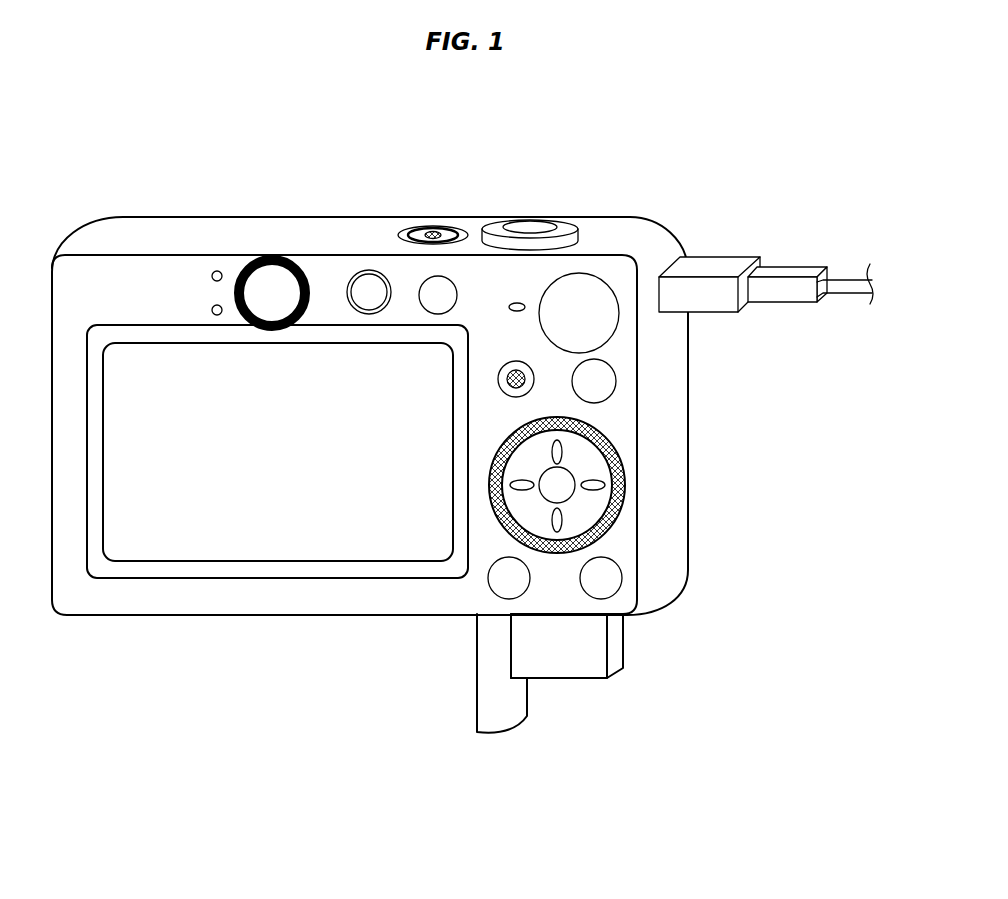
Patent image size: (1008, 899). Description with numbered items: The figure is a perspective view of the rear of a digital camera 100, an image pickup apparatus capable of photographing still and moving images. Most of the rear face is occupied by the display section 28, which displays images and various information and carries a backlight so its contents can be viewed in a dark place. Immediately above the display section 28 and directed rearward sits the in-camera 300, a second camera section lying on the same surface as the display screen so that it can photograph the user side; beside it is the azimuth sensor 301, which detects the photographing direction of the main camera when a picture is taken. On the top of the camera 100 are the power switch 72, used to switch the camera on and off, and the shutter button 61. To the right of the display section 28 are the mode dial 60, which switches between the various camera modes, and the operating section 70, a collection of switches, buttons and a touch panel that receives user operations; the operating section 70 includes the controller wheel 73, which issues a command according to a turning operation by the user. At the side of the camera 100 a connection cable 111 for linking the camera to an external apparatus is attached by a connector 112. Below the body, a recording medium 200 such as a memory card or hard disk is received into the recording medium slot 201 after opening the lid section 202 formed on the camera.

The digital camera 100 is at (148, 660).
The display section 28 is at (192, 363).
The in-camera 300 is at (347, 278).
The azimuth sensor 301 is at (424, 283).
The power switch 72 is at (433, 235).
The shutter button 61 is at (530, 226).
The mode dial 60 is at (596, 290).
The controller wheel 73 is at (497, 468).
The operating section 70 is at (537, 245).
The connector 112 is at (708, 262).
The connection cable 111 is at (790, 270).
The recording medium 200 is at (558, 660).
The recording medium slot 201 is at (533, 615).
The lid section 202 is at (532, 716).